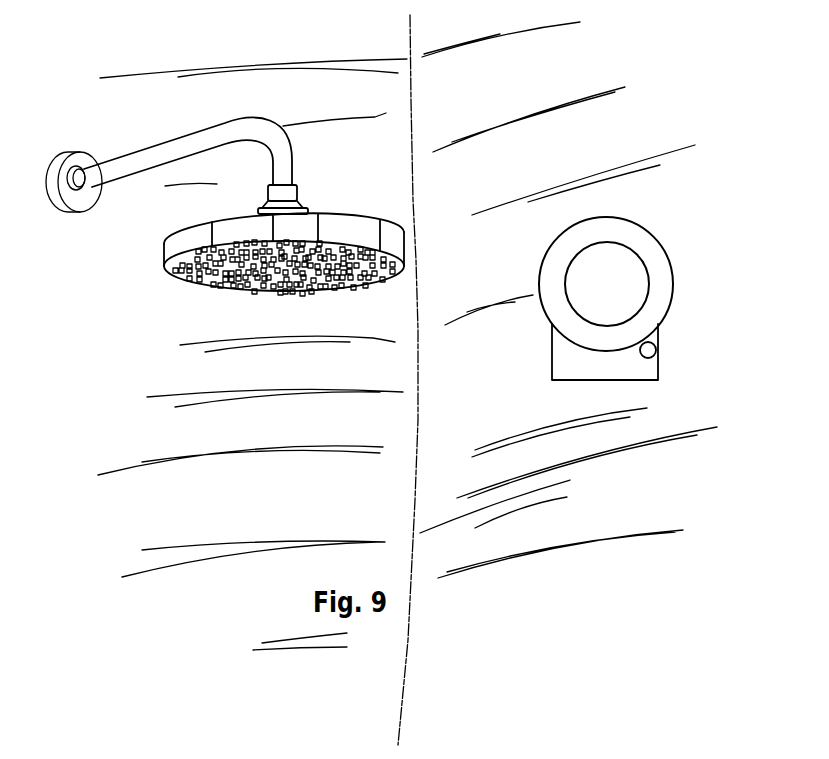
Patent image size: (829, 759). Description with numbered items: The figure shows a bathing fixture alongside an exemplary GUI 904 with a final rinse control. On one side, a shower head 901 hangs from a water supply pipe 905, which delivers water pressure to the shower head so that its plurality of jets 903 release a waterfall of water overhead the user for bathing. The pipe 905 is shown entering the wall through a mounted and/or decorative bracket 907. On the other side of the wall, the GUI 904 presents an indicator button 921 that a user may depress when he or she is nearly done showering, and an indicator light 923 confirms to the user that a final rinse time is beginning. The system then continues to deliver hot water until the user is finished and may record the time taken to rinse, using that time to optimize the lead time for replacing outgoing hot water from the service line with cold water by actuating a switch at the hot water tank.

The shower head 901 is at (243, 241).
The jets 903 is at (387, 255).
The GUI 904 is at (560, 297).
The water supply pipe 905 is at (185, 145).
The bracket 907 is at (70, 160).
The indicator button 921 is at (625, 265).
The indicator light 923 is at (655, 355).